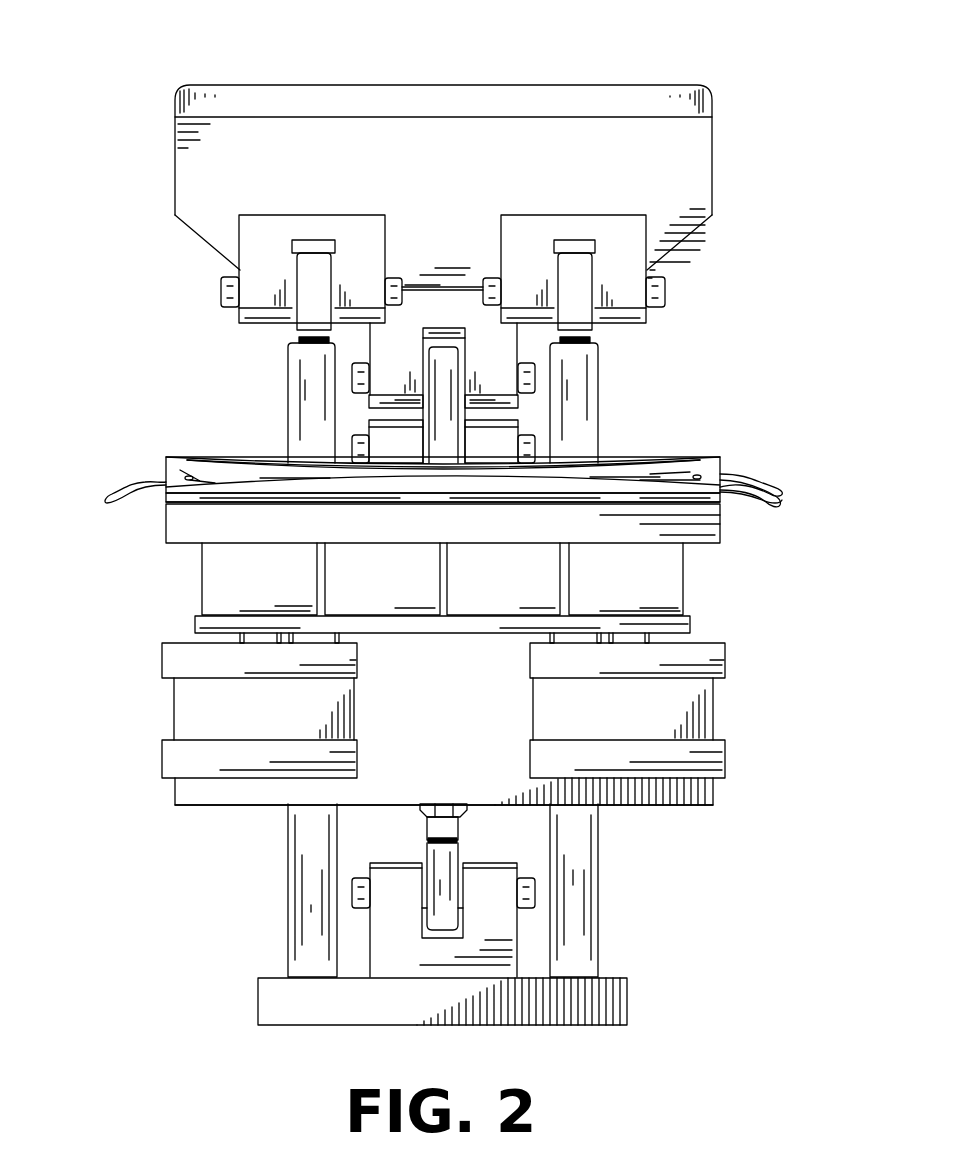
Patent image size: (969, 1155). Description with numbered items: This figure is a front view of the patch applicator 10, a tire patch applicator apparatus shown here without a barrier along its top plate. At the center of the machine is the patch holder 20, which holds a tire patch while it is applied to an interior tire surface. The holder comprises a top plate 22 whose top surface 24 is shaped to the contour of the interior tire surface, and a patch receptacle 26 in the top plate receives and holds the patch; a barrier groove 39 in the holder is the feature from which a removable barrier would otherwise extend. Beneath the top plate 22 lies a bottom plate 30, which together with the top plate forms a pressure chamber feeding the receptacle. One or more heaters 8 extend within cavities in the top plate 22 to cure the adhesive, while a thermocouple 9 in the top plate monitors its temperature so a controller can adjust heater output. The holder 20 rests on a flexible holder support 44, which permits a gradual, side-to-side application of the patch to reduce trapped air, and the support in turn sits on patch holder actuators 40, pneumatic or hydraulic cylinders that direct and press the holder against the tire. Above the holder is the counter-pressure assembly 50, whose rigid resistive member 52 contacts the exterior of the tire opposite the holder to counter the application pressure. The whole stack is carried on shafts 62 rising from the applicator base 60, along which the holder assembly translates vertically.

The patch applicator 10 is at (820, 78).
The counter-pressure assembly 50 is at (110, 276).
The resistive member 52 is at (463, 177).
The patch holder 20 is at (820, 393).
The top surface 24 is at (166, 467).
The patch receptacle 26 is at (233, 465).
The barrier groove 39 is at (187, 460).
The top plate 22 is at (166, 497).
The bottom plate 30 is at (443, 537).
The heater 8 is at (120, 487).
The thermocouple 9 is at (770, 477).
The flexible holder support 44 is at (280, 594).
The patch holder actuator 40 is at (277, 725).
The shaft 62 is at (302, 897).
The applicator base 60 is at (613, 995).